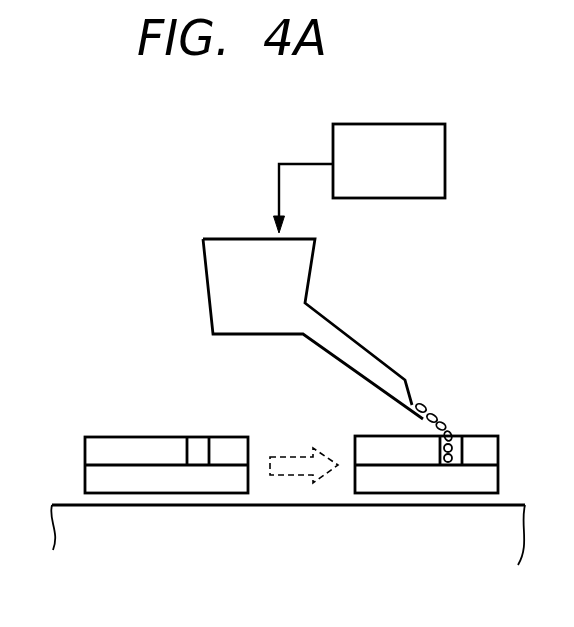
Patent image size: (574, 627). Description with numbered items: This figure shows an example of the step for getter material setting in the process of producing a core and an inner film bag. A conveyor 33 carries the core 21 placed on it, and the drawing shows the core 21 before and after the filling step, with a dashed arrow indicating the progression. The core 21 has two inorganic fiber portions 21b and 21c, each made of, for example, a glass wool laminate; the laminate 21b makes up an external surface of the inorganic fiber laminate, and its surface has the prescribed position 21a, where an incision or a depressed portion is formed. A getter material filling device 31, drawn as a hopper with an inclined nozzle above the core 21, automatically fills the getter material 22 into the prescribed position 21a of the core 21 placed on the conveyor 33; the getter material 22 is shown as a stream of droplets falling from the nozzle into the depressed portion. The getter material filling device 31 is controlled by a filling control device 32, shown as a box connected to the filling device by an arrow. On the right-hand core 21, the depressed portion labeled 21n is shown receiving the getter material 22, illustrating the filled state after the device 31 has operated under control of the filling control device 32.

The core 21 is at (143, 493).
The prescribed position 21a is at (197, 443).
The inorganic fiber portion 21b is at (122, 437).
The inorganic fiber portion 21c is at (84, 475).
The groove being filled 21n is at (457, 432).
The getter material 22 is at (437, 406).
The getter material filling device 31 is at (230, 239).
The filling control device 32 is at (332, 142).
The conveyor 33 is at (257, 507).